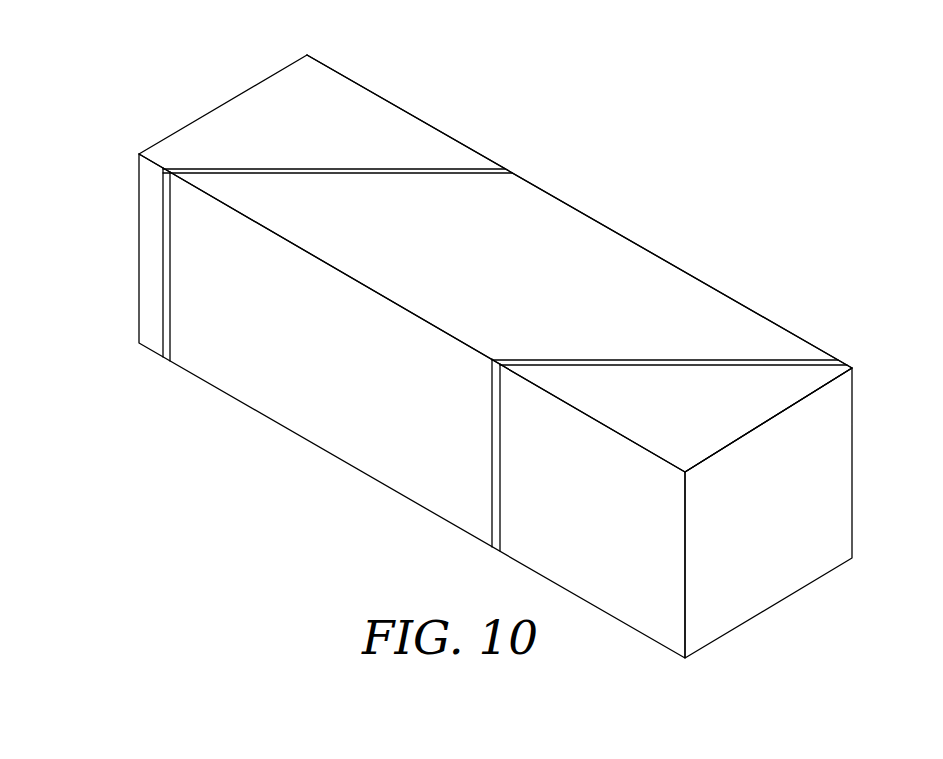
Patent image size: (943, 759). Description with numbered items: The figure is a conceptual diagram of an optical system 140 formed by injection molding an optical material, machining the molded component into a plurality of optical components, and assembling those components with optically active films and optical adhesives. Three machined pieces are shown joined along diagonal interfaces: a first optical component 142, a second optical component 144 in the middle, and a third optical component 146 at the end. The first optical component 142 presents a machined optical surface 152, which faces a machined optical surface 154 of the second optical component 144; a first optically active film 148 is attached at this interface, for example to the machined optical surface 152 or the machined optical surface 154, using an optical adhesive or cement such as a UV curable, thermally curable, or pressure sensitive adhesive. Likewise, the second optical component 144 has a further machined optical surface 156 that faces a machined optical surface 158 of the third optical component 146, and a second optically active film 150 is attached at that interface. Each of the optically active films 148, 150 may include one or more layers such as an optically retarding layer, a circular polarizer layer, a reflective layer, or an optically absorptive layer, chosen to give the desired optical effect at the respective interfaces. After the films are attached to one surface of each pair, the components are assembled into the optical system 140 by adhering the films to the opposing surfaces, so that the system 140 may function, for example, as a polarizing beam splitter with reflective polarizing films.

The optical system 140 is at (99, 73).
The first optical component 142 is at (325, 98).
The second optical component 144 is at (523, 215).
The third optical component 146 is at (838, 445).
The first optically active film 148 is at (503, 168).
The second optically active film 150 is at (835, 363).
The machined optical surface 152 is at (435, 167).
The machined optical surface 154 is at (190, 176).
The machined optical surface 156 is at (767, 360).
The machined optical surface 158 is at (583, 365).